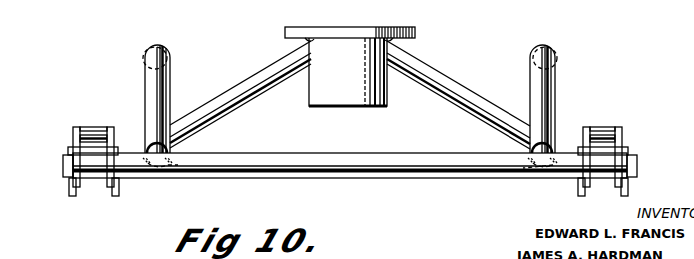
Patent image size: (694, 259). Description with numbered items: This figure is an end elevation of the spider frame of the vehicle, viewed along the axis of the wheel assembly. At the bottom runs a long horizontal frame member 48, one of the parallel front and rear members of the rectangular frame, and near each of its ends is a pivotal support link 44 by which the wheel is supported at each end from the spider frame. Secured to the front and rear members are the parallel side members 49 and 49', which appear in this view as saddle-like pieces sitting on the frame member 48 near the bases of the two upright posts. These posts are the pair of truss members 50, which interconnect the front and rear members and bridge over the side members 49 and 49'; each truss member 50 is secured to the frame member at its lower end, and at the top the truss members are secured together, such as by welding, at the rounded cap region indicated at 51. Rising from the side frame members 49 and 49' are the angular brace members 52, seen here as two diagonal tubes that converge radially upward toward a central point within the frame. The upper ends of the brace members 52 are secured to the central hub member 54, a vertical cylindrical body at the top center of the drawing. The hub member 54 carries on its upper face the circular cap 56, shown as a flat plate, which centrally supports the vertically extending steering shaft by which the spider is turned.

The pivotal support links 44 is at (79, 132).
The front frame member 48 is at (393, 172).
The side frame member 49 is at (535, 178).
The side frame member 49' is at (173, 177).
The truss members 50 is at (163, 78).
The welded joint of truss members 51 is at (143, 55).
The angular brace members 52 is at (245, 80).
The central hub member 54 is at (387, 90).
The circular cap 56 is at (303, 31).